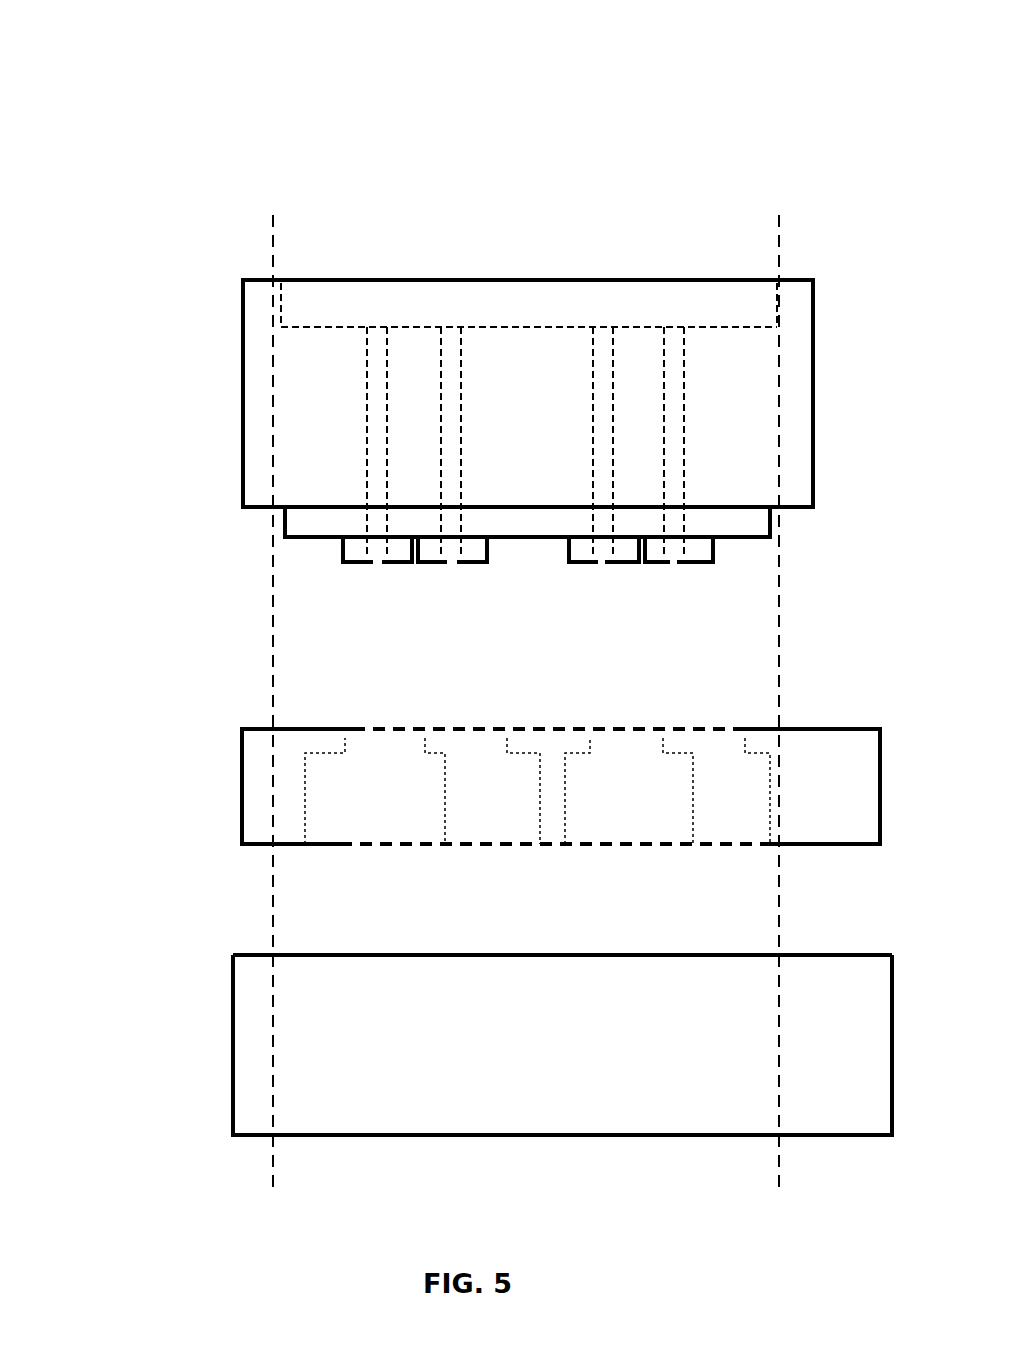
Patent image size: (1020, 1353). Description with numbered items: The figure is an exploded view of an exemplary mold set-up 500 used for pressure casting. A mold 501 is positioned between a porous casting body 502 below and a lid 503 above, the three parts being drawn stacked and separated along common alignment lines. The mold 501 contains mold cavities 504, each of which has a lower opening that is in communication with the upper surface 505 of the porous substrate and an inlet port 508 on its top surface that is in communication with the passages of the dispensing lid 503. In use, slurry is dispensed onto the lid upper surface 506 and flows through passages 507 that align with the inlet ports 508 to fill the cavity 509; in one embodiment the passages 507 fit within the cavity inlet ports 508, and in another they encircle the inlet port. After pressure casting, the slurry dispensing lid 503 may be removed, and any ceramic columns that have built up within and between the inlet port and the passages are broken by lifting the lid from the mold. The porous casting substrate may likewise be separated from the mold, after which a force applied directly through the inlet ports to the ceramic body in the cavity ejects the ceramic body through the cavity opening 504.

The mold set-up 500 is at (428, 152).
The mold 501 is at (253, 777).
The porous casting body 502 is at (338, 1047).
The lid 503 is at (235, 403).
The mold cavities 504 is at (360, 833).
The upper surface of the porous substrate 505 is at (343, 955).
The lid upper surface 506 is at (347, 310).
The passages 507 is at (377, 545).
The inlet ports 508 is at (377, 735).
The cavity 509 is at (352, 797).